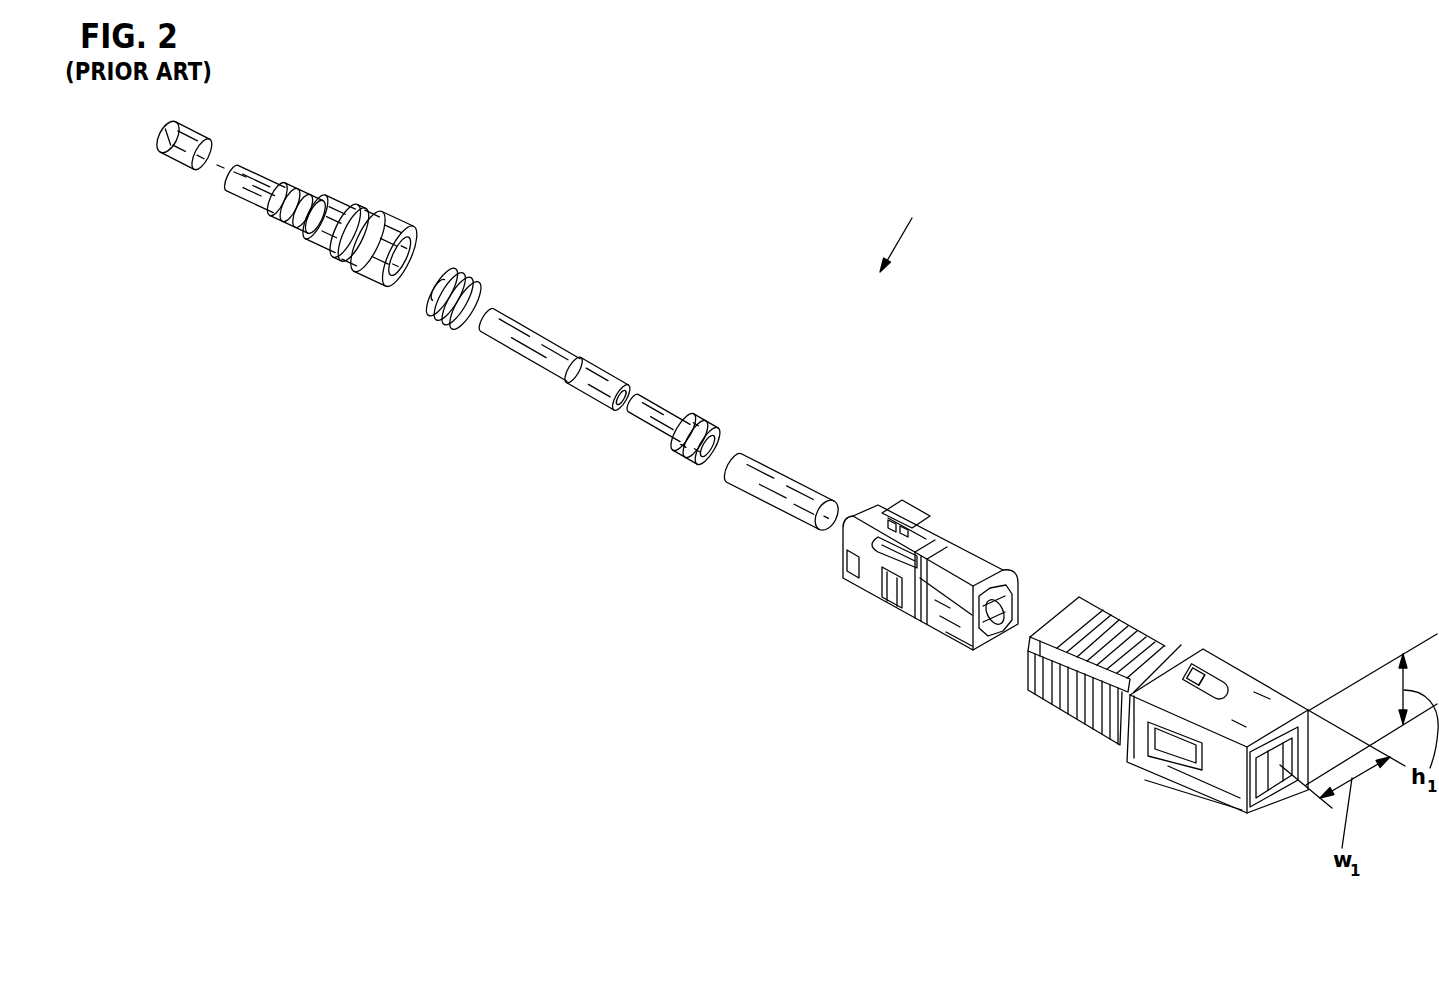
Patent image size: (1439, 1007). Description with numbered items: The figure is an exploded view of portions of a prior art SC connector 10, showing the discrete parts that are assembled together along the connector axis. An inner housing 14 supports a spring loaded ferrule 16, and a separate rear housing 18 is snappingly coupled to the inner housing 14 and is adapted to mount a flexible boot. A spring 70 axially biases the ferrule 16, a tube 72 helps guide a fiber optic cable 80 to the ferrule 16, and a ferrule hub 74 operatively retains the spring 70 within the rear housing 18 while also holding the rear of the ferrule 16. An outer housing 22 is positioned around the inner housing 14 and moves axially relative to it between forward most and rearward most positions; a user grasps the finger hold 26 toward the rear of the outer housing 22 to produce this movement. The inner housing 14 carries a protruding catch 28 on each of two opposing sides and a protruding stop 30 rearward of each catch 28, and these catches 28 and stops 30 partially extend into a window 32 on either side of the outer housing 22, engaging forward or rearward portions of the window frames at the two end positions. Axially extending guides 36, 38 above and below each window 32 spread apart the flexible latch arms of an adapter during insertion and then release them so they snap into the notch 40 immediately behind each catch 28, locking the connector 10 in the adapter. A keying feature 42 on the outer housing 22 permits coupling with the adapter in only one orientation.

The SC connector 10 is at (907, 232).
The inner housing 14 is at (952, 628).
The ferrule 16 is at (790, 472).
The rear housing 18 is at (340, 205).
The outer housing 22 is at (1162, 658).
The finger hold 26 is at (1118, 615).
The protruding catch 28 is at (967, 542).
The protruding stop 30 is at (890, 597).
The window 32 is at (1204, 772).
The axially extending guide 36 is at (1190, 738).
The axially extending guide 38 is at (1176, 787).
The notch 40 is at (922, 573).
The keying feature 42 is at (1218, 687).
The spring 70 is at (467, 273).
The tube 72 is at (545, 352).
The ferrule hub 74 is at (677, 423).
The fiber optic cable 80 is at (195, 131).